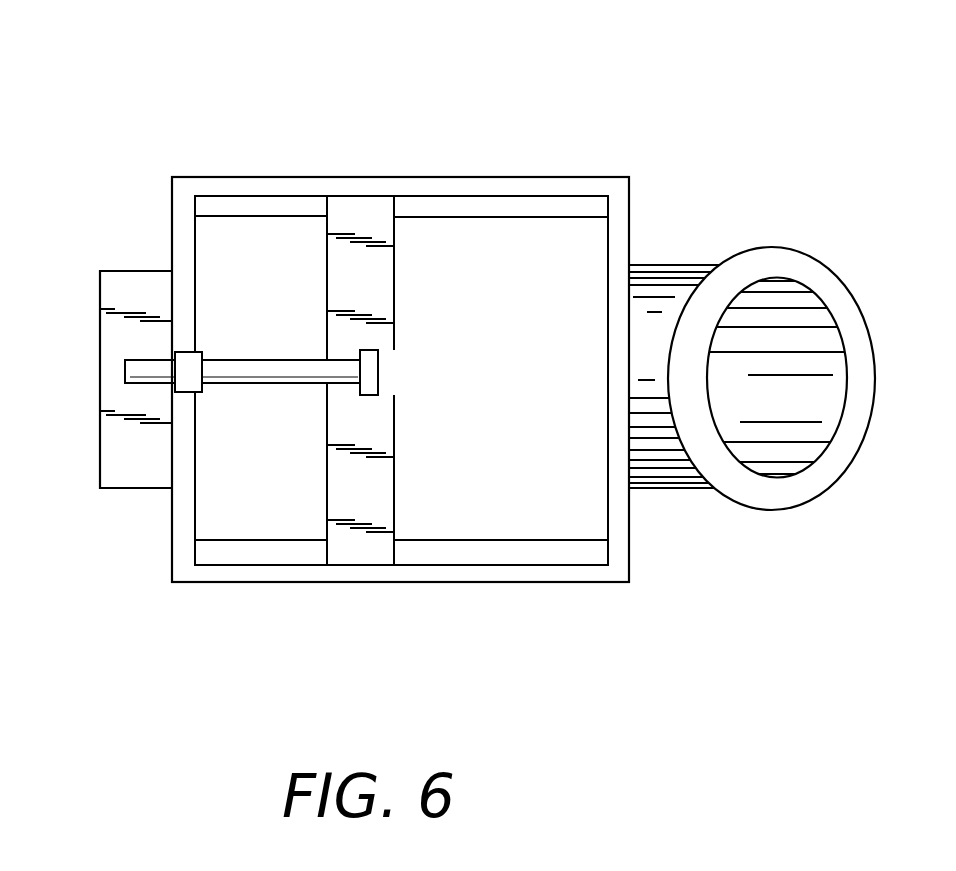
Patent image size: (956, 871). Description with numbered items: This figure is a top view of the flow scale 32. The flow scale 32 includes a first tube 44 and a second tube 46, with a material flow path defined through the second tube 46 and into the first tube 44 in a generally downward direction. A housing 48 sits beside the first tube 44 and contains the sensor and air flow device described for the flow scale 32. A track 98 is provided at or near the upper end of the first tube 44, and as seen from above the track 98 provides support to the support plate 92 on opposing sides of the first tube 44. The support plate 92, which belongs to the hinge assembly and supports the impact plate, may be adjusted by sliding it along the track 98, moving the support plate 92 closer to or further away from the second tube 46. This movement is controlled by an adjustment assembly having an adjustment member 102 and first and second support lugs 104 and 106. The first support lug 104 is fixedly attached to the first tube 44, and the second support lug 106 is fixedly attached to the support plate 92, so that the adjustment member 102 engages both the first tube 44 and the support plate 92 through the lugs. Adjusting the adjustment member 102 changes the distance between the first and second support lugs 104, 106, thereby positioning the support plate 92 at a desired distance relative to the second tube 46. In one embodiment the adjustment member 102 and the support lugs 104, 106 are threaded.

The flow scale 32 is at (292, 140).
The first tube 44 is at (442, 583).
The second tube 46 is at (653, 491).
The housing 48 is at (100, 466).
The support plate 92 is at (382, 297).
The track 98 is at (490, 220).
The adjustment member 102 is at (140, 360).
The first support lug 104 is at (197, 352).
The second support lug 106 is at (378, 380).